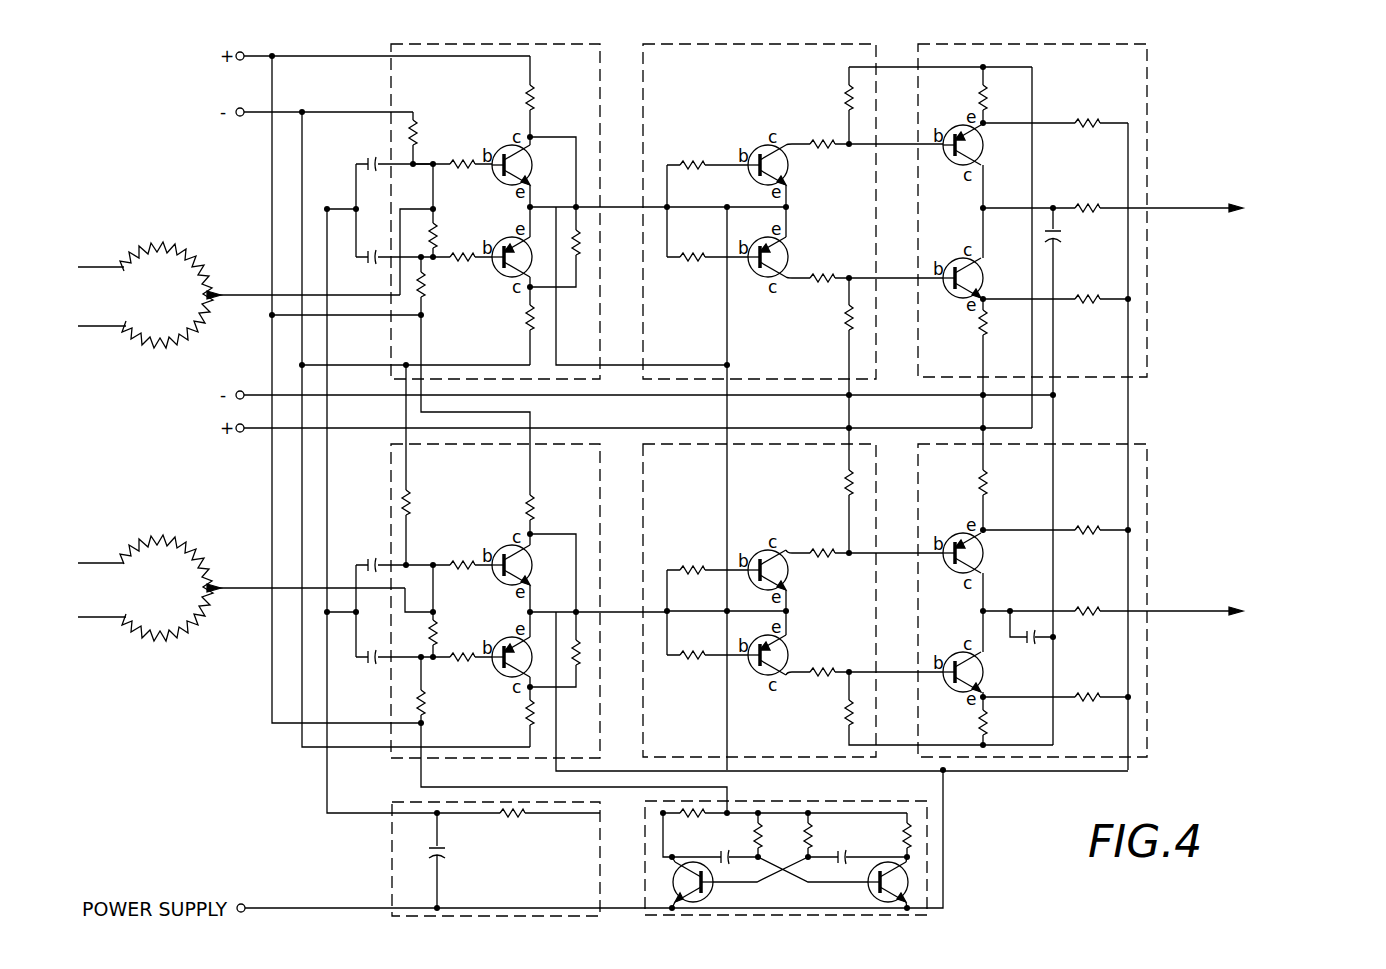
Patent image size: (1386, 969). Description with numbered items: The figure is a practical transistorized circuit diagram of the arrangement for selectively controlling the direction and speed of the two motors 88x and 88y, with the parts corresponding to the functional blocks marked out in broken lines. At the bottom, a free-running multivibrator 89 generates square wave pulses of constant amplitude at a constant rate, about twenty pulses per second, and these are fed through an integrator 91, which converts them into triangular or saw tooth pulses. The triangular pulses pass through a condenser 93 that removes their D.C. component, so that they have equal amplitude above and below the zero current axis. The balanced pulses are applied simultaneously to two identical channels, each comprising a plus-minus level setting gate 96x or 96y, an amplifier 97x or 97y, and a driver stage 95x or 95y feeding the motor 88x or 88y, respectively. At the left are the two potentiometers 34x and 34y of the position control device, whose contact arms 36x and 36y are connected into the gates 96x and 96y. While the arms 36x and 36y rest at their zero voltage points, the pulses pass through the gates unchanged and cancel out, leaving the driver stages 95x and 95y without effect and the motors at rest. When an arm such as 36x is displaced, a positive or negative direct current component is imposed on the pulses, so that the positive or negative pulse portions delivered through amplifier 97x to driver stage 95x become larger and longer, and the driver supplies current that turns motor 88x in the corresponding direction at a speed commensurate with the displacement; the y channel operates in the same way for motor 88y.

The potentiometer 34x is at (192, 264).
The contact arm 36x is at (224, 299).
The potentiometer 34y is at (193, 624).
The contact arm 36y is at (228, 586).
The condenser 93 is at (373, 246).
The plus-minus level setting gate 96x is at (600, 82).
The amplifier 97x is at (876, 63).
The driver stage 95x is at (1147, 74).
The motor 88x is at (1184, 208).
The plus-minus level setting gate 96y is at (600, 485).
The amplifier 97y is at (876, 486).
The driver stage 95y is at (1147, 488).
The motor 88y is at (1184, 611).
The integrator 91 is at (600, 862).
The free-running multivibrator 89 is at (927, 843).